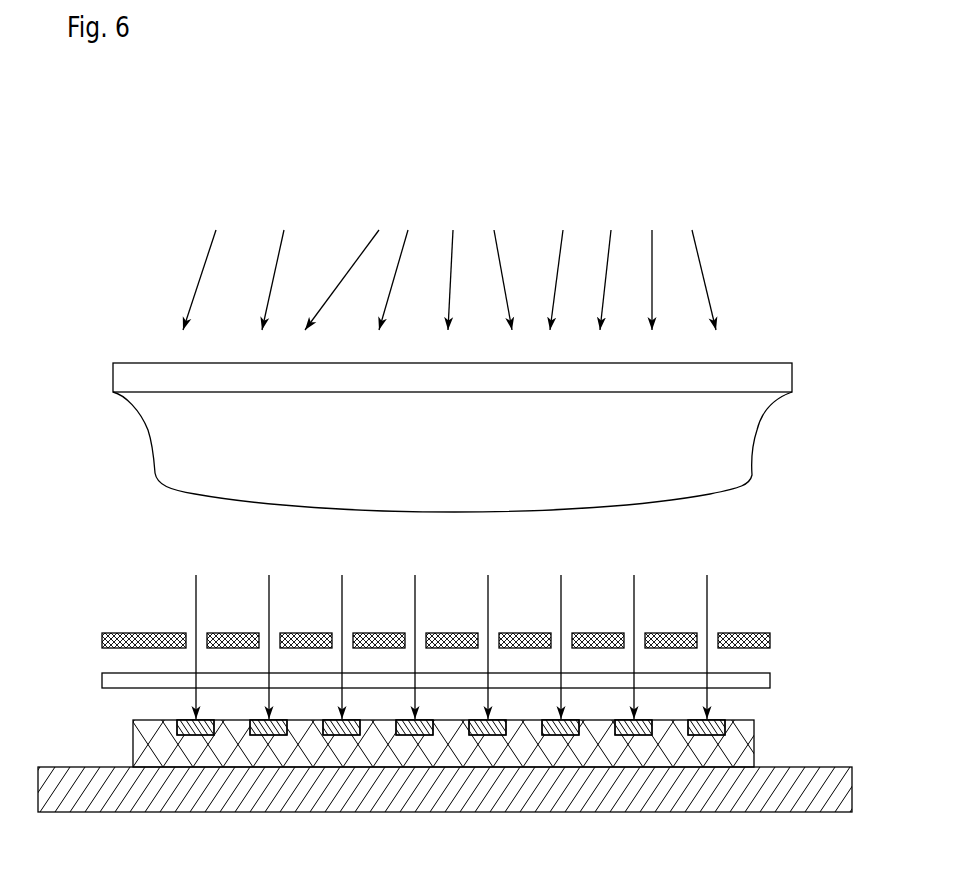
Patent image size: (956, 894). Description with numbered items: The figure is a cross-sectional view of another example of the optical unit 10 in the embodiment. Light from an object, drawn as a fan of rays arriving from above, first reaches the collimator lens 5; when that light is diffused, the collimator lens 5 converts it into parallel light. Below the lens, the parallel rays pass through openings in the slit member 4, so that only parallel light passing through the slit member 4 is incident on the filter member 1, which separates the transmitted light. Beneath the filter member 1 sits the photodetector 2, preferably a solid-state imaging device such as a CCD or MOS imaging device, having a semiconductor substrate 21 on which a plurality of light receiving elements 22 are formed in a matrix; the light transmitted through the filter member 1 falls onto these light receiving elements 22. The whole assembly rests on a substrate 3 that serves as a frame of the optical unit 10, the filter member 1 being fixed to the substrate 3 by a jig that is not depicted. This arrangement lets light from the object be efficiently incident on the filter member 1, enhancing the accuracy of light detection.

The optical unit 10 is at (162, 232).
The collimator lens 5 is at (742, 362).
The slit member 4 is at (740, 632).
The filter member 1 is at (770, 679).
The photodetector 2 is at (756, 735).
The semiconductor substrate 21 is at (140, 747).
The light receiving elements 22 is at (190, 719).
The substrate 3 is at (666, 812).